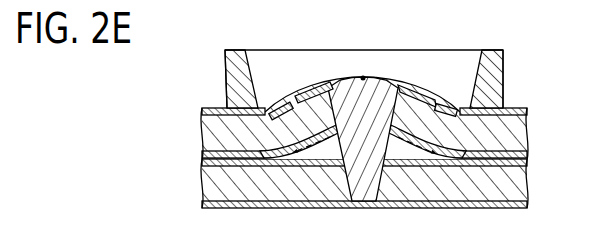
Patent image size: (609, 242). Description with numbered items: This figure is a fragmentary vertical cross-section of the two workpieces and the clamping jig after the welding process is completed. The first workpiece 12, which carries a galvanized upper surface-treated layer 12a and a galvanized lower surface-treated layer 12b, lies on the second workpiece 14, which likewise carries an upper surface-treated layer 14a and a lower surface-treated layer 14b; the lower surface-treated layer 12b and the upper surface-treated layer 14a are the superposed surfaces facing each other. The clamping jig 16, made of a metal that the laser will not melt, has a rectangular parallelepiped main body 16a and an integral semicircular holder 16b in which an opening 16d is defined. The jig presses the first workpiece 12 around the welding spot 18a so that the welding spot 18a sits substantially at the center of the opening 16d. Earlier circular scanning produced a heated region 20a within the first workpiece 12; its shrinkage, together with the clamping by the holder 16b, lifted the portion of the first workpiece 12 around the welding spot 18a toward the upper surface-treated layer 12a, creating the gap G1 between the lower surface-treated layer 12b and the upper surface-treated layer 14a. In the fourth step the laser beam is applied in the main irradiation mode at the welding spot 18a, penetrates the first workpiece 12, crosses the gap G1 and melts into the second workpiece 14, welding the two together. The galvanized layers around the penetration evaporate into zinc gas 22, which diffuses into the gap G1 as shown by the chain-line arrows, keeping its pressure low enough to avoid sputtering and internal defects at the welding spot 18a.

The first workpiece 12 is at (521, 107).
The upper surface-treated layer 12a is at (526, 111).
The lower surface-treated layer 12b is at (528, 154).
The second workpiece 14 is at (272, 208).
The upper surface-treated layer 14a is at (203, 162).
The lower surface-treated layer 14b is at (203, 203).
The clamping jig 16 is at (228, 48).
The main body 16a is at (222, 69).
The holder 16b is at (500, 66).
The opening 16d is at (433, 51).
The welding spot 18a is at (363, 77).
The heated region 20a is at (281, 104).
The zinc gas 22 is at (311, 136).
The gap G1 is at (398, 140).